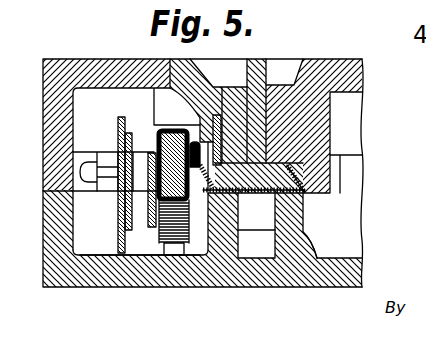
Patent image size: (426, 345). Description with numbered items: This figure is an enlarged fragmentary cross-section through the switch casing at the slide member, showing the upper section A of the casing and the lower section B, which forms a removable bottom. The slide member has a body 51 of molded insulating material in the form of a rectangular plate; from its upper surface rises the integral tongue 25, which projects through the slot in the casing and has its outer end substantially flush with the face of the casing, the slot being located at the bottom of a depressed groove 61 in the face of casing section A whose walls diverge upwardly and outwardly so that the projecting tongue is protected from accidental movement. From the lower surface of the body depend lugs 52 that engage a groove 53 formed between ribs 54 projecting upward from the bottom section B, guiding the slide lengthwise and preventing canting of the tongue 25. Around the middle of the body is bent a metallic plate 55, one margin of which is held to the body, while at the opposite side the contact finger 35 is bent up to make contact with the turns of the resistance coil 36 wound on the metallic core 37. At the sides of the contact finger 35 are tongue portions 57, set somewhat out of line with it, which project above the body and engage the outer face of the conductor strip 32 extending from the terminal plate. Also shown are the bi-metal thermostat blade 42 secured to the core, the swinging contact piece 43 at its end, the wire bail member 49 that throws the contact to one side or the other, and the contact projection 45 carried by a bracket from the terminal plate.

The upper section of the casing A is at (62, 72).
The lower section of the casing B is at (65, 245).
The tongue 25 is at (271, 62).
The conductor strip 32 is at (230, 113).
The contact finger 35 is at (200, 192).
The resistance coil 36 is at (173, 245).
The metallic core 37 is at (147, 228).
The bi-metal thermostat bar or blade 42 is at (97, 255).
The swinging metallic contact piece 43 is at (116, 153).
The contact projection 45 is at (107, 173).
The wire bail member 49 is at (118, 223).
The body of the slide member 51 is at (340, 172).
The lugs 52 is at (290, 218).
The groove 53 is at (257, 240).
The ribs 54 is at (313, 262).
The metallic plate 55 is at (302, 194).
The tongue portions 57 is at (168, 80).
The groove 61 is at (316, 75).